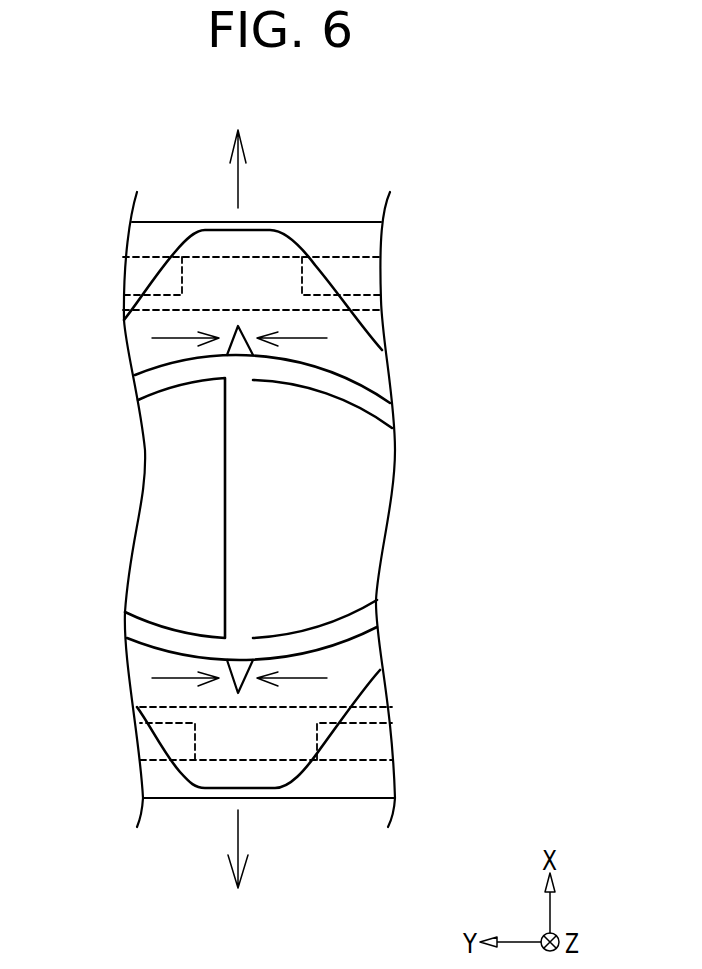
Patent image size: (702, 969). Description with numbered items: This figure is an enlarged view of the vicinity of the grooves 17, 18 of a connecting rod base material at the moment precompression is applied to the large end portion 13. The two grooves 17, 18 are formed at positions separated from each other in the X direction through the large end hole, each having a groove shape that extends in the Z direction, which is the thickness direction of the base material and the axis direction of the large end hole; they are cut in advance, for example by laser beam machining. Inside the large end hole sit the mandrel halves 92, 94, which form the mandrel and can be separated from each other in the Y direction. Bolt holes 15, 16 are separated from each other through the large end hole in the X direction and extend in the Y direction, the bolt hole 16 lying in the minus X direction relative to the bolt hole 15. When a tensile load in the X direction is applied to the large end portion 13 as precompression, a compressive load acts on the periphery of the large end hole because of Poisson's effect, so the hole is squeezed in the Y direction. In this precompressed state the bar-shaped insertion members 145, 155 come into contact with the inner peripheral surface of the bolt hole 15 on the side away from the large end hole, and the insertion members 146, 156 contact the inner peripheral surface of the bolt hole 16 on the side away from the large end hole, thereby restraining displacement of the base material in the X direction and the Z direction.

The large end portion 13 is at (348, 235).
The bolt hole 15 is at (245, 272).
The bolt hole 16 is at (290, 763).
The groove 17 is at (233, 333).
The groove 18 is at (243, 658).
The mandrel half 92 is at (152, 573).
The mandrel half 94 is at (357, 587).
The insertion member 145 is at (127, 300).
The insertion member 155 is at (363, 284).
The insertion member 146 is at (172, 723).
The insertion member 156 is at (363, 723).